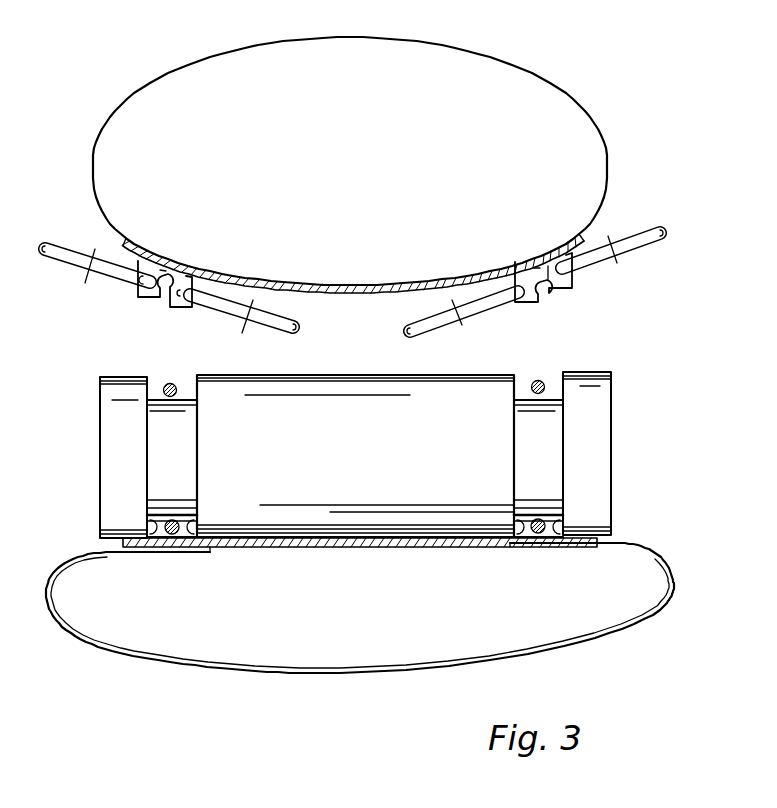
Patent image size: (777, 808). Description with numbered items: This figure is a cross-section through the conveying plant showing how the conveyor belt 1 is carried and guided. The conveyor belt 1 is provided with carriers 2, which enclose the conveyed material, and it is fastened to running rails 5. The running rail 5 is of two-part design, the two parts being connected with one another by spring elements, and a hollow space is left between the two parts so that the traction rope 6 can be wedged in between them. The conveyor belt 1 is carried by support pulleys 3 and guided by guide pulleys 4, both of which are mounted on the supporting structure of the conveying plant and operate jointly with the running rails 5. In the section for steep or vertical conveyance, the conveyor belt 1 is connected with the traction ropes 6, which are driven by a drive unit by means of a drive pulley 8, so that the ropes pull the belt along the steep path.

The conveyor belt 1 is at (405, 283).
The carriers 2 is at (571, 100).
The support pulleys 3 is at (238, 309).
The guide pulleys 4 is at (55, 250).
The running rail 5 is at (167, 300).
The traction rope 6 is at (542, 380).
The drive pulley 8 is at (603, 422).